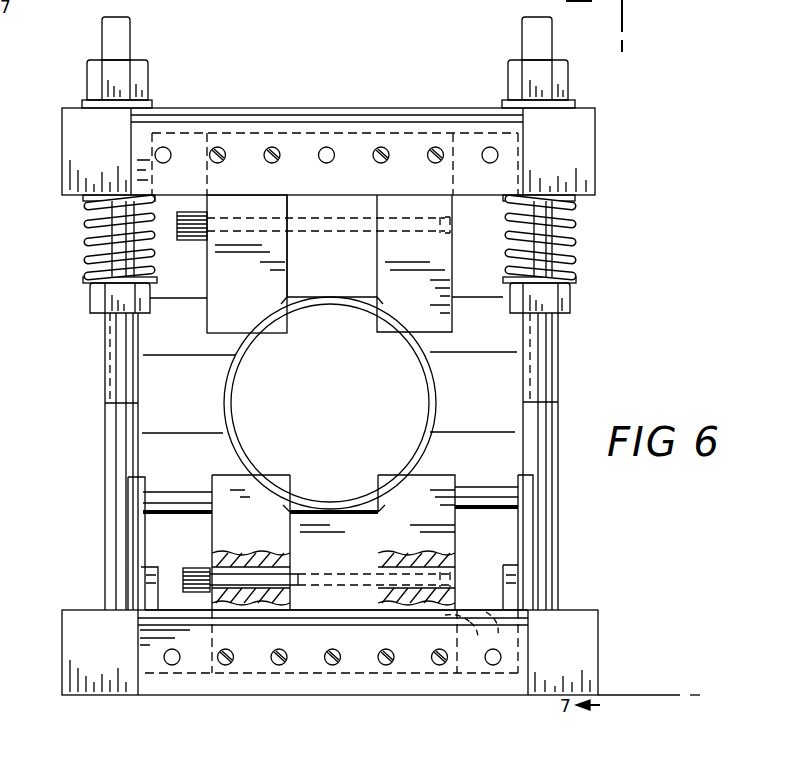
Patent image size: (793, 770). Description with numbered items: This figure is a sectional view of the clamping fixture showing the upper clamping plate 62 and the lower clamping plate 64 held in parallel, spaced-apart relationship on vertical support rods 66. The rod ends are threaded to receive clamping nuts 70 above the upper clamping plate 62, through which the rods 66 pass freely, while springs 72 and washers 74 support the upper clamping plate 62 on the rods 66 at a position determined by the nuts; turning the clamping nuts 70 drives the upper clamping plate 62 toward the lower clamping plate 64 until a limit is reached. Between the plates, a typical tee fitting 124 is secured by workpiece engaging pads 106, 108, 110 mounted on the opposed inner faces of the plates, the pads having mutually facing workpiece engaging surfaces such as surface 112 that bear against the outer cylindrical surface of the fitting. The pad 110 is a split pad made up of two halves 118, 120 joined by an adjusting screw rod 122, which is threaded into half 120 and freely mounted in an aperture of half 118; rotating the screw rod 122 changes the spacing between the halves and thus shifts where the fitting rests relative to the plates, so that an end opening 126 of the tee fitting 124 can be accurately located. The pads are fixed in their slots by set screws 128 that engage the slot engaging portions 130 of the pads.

The upper clamping plate 62 is at (62, 152).
The lower clamping plate 64 is at (75, 632).
The support rods 66 is at (105, 348).
The clamping nuts 70 is at (88, 72).
The springs 72 is at (85, 245).
The washers 74 is at (85, 200).
The workpiece engaging pad 106 is at (228, 482).
The workpiece engaging pad 108 is at (520, 545).
The split pad 110 is at (147, 497).
The workpiece engaging surface 112 is at (400, 478).
The pad half 118 is at (282, 542).
The pad half 120 is at (395, 536).
The adjusting screw rod 122 is at (205, 575).
The tee fitting 124 is at (437, 401).
The end opening 126 is at (350, 364).
The set screws 128 is at (345, 650).
The slot engaging portions 130 is at (496, 612).